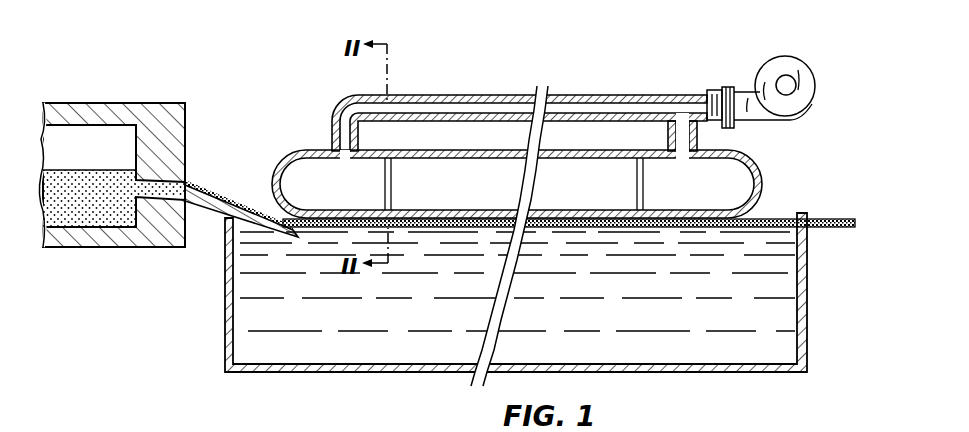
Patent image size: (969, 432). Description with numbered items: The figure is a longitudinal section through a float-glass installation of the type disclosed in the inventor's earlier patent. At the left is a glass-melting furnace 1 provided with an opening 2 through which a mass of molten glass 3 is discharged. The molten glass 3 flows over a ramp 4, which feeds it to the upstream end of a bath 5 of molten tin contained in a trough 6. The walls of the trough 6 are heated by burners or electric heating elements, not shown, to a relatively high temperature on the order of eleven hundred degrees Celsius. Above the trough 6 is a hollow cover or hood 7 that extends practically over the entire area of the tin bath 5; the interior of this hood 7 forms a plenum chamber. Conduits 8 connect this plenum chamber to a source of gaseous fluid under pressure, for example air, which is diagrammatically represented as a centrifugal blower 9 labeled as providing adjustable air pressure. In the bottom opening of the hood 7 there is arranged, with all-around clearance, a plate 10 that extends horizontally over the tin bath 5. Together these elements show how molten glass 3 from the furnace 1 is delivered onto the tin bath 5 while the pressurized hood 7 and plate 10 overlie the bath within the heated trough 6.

The glass-melting furnace 1 is at (70, 240).
The opening 2 is at (160, 180).
The molten glass 3 is at (830, 220).
The ramp 4 is at (215, 208).
The bath of molten tin 5 is at (246, 320).
The trough 6 is at (456, 376).
The hollow cover or hood 7 is at (300, 150).
The conduits 8 is at (597, 95).
The centrifugal blower 9 is at (792, 58).
The plate 10 is at (570, 210).